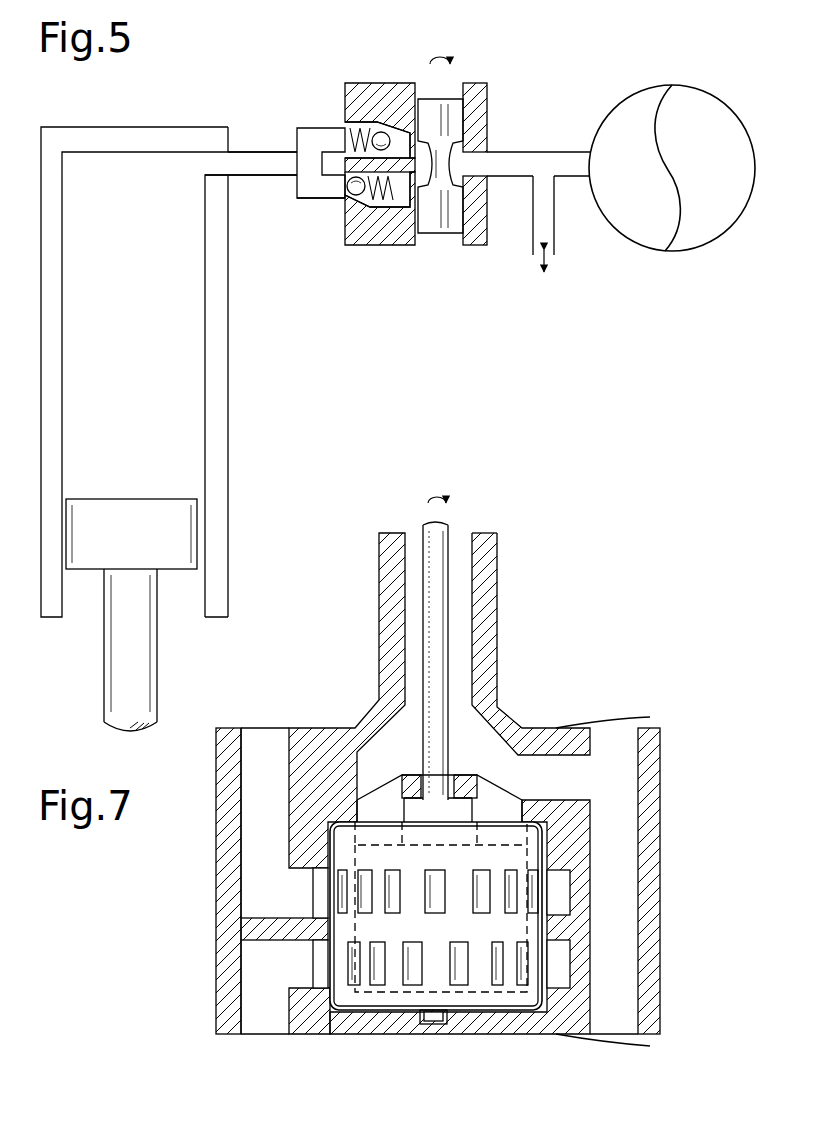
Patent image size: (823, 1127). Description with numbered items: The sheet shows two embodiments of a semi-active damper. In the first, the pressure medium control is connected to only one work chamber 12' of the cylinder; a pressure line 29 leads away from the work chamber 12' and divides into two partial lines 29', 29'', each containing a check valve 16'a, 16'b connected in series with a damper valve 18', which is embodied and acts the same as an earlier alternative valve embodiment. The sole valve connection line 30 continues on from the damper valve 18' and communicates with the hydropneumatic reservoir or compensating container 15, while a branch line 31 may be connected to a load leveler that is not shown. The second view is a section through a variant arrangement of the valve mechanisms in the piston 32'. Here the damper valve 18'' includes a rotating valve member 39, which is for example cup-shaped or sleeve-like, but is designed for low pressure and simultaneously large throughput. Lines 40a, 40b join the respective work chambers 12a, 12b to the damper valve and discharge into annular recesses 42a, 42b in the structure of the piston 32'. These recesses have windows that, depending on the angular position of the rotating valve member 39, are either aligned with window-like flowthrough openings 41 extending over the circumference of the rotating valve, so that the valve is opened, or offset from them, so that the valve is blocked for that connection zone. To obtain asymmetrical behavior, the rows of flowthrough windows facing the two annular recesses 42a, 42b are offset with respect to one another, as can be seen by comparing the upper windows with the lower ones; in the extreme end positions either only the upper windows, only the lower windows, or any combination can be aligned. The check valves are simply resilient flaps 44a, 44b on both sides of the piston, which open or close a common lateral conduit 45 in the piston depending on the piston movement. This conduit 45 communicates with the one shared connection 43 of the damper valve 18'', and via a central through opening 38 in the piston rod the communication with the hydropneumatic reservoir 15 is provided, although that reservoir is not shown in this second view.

In FIG. 5, the work chamber 12' is at (169, 401).
In FIG. 5, the pressure line 29 is at (251, 97).
In FIG. 5, the partial line 29' is at (321, 108).
In FIG. 5, the partial line 29'' is at (307, 240).
In FIG. 5, the check valve 16'a is at (380, 88).
In FIG. 5, the check valve 16'b is at (377, 233).
In FIG. 5, the damper valve 18' is at (444, 132).
In FIG. 5, the valve connection line 30 is at (527, 163).
In FIG. 5, the branch line 31 is at (547, 222).
In FIG. 5, the hydropneumatic reservoir 15 is at (625, 118).
In FIG. 7, the work chamber 12a is at (310, 783).
In FIG. 7, the work chamber 12b is at (397, 951).
In FIG. 7, the central through opening 38 is at (467, 543).
In FIG. 7, the shared connection 43 is at (496, 760).
In FIG. 7, the resilient flap 44a is at (618, 722).
In FIG. 7, the resilient flap 44b is at (620, 1046).
In FIG. 7, the lateral conduit 45 is at (632, 824).
In FIG. 7, the annular recess 42a is at (562, 883).
In FIG. 7, the annular recess 42b is at (565, 967).
In FIG. 7, the line 40a is at (250, 870).
In FIG. 7, the line 40b is at (250, 985).
In FIG. 7, the piston 32' is at (446, 939).
In FIG. 7, the damper valve 18'' is at (415, 986).
In FIG. 7, the flowthrough openings 41 is at (453, 978).
In FIG. 7, the rotating valve member 39 is at (482, 1006).